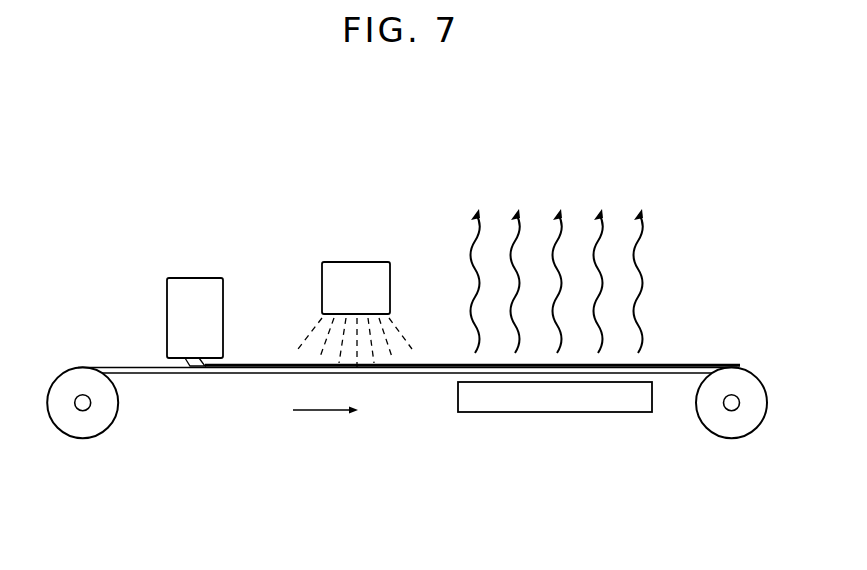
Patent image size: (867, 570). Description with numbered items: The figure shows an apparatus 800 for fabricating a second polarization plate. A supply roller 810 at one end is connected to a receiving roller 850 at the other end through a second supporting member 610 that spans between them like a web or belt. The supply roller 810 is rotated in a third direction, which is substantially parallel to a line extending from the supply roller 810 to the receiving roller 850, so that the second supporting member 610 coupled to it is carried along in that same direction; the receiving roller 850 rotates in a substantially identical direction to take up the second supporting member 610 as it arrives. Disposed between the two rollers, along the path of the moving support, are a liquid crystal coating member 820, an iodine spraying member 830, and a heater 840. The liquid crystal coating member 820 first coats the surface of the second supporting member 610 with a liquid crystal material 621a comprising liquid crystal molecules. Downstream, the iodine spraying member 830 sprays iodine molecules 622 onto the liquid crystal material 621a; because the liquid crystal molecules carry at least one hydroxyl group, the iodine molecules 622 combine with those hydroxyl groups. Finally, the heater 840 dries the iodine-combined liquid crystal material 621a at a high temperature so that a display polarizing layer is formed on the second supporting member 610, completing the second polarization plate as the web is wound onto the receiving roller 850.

The apparatus for fabricating a second polarization plate 800 is at (389, 130).
The second supporting member 610 is at (158, 373).
The liquid crystal material 621a is at (258, 364).
The iodine molecules 622 is at (400, 332).
The supply roller 810 is at (82, 438).
The liquid crystal coating member 820 is at (195, 278).
The iodine spraying member 830 is at (355, 262).
The heater 840 is at (555, 412).
The receiving roller 850 is at (731, 438).